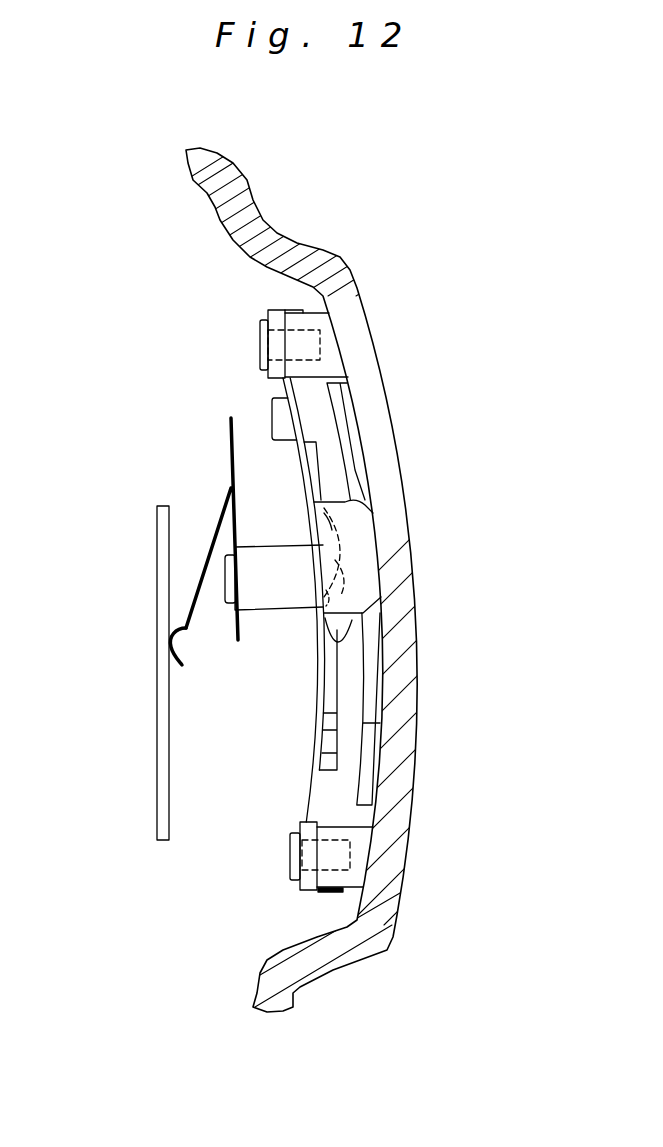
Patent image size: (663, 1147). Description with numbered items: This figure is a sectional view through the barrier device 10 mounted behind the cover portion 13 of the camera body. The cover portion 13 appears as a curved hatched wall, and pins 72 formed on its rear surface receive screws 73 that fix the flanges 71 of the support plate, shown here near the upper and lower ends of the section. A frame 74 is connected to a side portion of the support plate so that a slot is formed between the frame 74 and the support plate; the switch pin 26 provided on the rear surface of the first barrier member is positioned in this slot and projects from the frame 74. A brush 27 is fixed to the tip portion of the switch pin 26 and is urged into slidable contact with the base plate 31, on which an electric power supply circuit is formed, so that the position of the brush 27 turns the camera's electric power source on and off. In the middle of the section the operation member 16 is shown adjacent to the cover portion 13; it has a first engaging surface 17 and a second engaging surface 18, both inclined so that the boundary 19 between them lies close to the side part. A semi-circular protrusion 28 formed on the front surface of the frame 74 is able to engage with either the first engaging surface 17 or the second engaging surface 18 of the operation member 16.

The barrier device 10 is at (331, 598).
The cover portion 13 is at (332, 268).
The operation member 16 is at (380, 555).
The first engaging surface 17 is at (325, 597).
The second engaging surface 18 is at (340, 522).
The boundary 19 is at (330, 560).
The switch pin 26 is at (281, 600).
The brush 27 is at (172, 663).
The semi-circular protrusion 28 is at (343, 628).
The base plate 31 is at (160, 573).
The flange 71 is at (276, 323).
The pin 72 is at (322, 324).
The screw 73 is at (320, 345).
The frame 74 is at (314, 503).